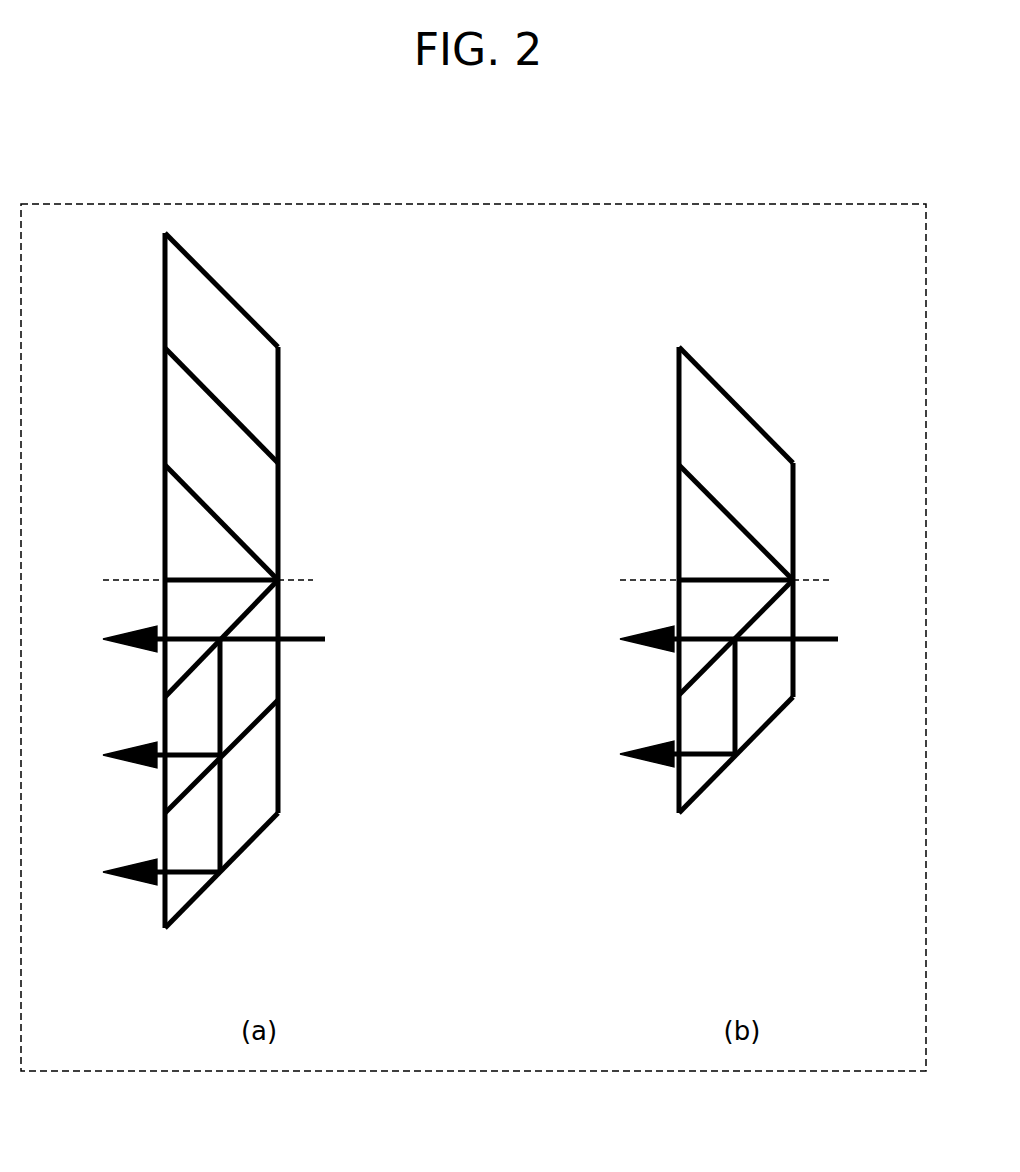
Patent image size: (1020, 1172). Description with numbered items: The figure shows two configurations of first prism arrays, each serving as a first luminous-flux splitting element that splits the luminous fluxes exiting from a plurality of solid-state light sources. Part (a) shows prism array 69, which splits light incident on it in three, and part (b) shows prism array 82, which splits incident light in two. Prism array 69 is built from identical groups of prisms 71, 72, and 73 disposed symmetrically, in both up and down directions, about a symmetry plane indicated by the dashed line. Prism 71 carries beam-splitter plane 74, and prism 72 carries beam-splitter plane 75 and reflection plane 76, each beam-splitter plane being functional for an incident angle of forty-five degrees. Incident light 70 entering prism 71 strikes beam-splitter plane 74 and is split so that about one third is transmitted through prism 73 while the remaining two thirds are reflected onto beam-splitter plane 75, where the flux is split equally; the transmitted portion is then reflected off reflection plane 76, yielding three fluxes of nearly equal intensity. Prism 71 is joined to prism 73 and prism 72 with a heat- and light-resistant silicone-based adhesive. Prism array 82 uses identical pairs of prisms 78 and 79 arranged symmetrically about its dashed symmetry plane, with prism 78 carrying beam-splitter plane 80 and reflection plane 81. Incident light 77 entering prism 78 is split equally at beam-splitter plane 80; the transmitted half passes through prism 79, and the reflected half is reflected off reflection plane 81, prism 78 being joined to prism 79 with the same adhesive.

The prism array 69 is at (147, 267).
The incident light 70 is at (300, 639).
The prism 71 is at (260, 510).
The prism 72 is at (258, 393).
The prism 73 is at (172, 571).
The beam-splitter plane 74 is at (318, 578).
The beam-splitter plane 75 is at (252, 430).
The reflection plane 76 is at (238, 305).
The incident light 77 is at (815, 639).
The prism 78 is at (773, 510).
The prism 79 is at (687, 572).
The beam-splitter plane 80 is at (833, 578).
The reflection plane 81 is at (740, 408).
The prism array 82 is at (660, 377).